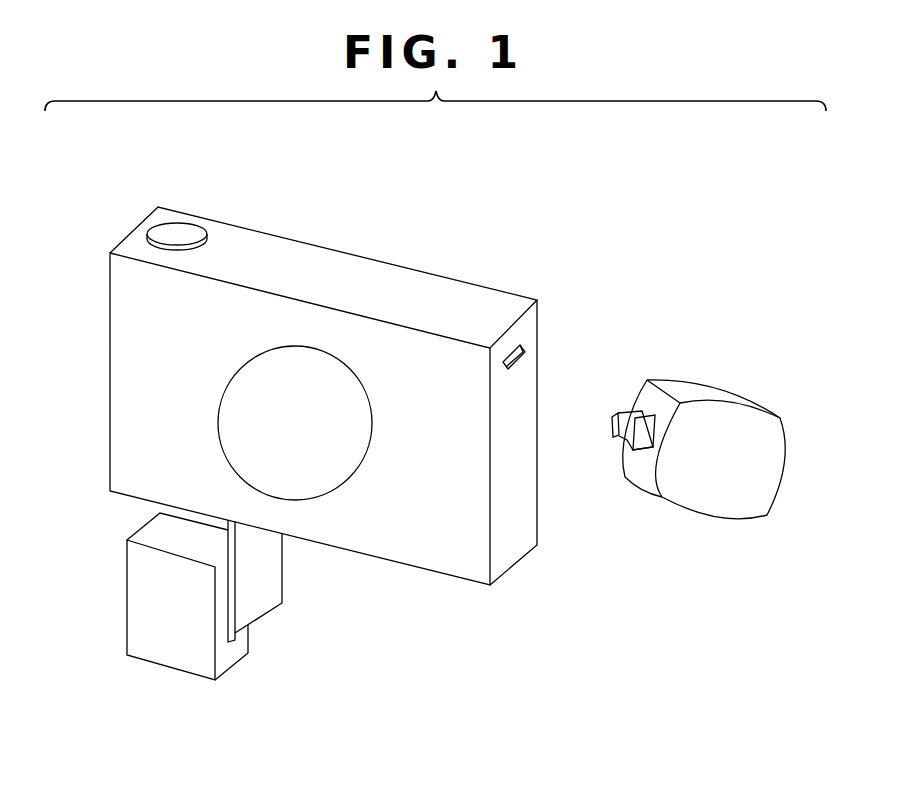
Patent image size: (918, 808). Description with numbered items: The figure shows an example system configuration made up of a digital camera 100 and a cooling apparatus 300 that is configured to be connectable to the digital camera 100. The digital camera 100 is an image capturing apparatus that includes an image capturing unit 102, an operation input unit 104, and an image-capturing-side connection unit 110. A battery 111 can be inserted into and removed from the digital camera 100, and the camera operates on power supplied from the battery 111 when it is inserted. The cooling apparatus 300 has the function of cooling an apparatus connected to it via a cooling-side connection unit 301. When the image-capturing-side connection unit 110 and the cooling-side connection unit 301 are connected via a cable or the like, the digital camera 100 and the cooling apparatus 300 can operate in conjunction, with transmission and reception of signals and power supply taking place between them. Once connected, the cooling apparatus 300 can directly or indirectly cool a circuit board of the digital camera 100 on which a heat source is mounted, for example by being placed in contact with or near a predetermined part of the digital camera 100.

The digital camera 100 is at (387, 262).
The image capturing unit 102 is at (372, 438).
The operation input unit 104 is at (175, 232).
The image-capturing-side connection unit 110 is at (520, 338).
The battery 111 is at (153, 662).
The cooling apparatus 300 is at (713, 390).
The cooling-side connection unit 301 is at (624, 412).